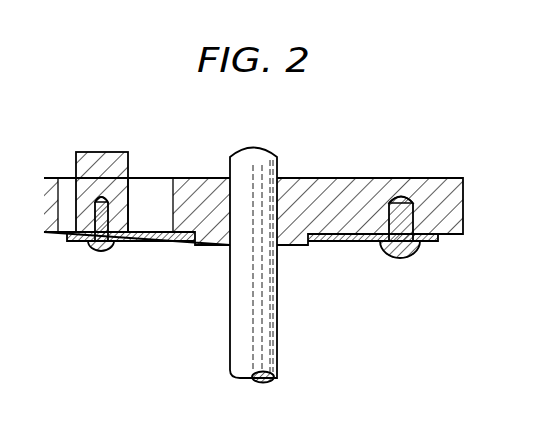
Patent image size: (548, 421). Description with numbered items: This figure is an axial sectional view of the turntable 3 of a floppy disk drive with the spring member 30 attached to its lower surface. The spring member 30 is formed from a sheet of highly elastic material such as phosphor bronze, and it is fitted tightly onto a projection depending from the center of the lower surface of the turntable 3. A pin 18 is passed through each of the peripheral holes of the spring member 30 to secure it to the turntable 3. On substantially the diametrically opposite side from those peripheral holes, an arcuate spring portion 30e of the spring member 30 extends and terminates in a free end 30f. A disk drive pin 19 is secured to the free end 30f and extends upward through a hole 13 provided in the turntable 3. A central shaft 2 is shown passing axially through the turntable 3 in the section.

The shaft 2 is at (236, 318).
The turntable 3 is at (346, 178).
The hole 13 is at (158, 183).
The pin 18 is at (410, 260).
The disk drive pin 19 is at (107, 155).
The spring member 30 is at (343, 248).
The arcuate spring portion 30e is at (150, 242).
The free end 30f is at (79, 243).